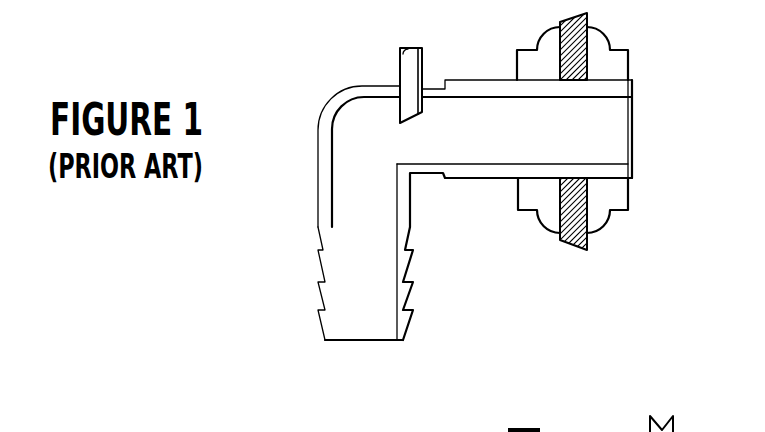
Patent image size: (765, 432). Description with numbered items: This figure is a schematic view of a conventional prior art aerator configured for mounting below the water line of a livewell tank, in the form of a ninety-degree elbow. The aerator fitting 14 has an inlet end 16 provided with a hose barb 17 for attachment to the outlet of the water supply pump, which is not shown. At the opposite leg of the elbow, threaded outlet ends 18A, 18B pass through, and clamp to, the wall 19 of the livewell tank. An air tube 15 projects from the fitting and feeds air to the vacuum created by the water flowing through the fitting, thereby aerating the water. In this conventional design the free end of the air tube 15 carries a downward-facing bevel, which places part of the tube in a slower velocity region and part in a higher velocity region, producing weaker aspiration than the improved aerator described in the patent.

The aerator fitting 14 is at (375, 359).
The air tube 15 is at (405, 57).
The inlet end 16 is at (385, 293).
The hose barb 17 is at (322, 282).
The threaded outlet end 18A is at (552, 63).
The threaded outlet end 18B is at (616, 196).
The wall 19 is at (590, 62).